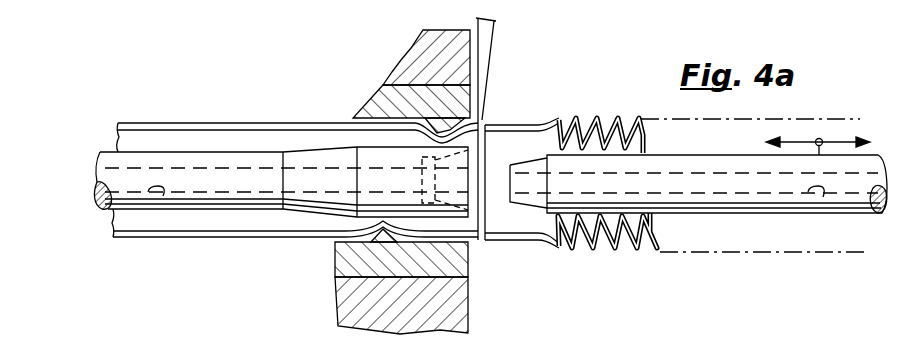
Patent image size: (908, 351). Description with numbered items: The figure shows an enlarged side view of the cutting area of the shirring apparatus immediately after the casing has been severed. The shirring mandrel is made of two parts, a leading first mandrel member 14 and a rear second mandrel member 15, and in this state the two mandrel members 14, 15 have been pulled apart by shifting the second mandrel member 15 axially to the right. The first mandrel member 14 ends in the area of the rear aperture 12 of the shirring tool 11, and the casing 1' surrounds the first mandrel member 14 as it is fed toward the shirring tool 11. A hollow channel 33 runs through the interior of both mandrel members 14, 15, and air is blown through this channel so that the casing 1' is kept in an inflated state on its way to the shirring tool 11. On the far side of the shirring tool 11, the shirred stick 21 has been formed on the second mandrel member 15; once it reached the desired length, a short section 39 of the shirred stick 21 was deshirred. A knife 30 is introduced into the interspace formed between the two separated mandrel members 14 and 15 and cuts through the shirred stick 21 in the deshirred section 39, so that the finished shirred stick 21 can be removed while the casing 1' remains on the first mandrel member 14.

The casing 1' is at (295, 150).
The first mandrel member 14 is at (201, 204).
The hollow channel 33 is at (163, 198).
The shirring tool 11 is at (470, 268).
The rear aperture 12 is at (470, 243).
The knife 30 is at (496, 32).
The deshirred section 39 is at (507, 123).
The shirred stick 21 is at (712, 250).
The second mandrel member 15 is at (759, 214).